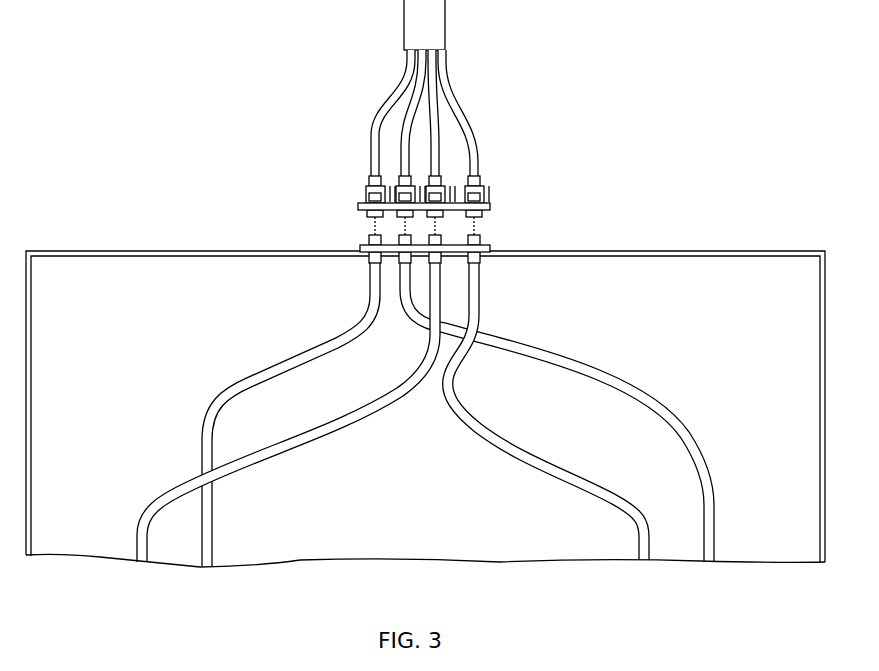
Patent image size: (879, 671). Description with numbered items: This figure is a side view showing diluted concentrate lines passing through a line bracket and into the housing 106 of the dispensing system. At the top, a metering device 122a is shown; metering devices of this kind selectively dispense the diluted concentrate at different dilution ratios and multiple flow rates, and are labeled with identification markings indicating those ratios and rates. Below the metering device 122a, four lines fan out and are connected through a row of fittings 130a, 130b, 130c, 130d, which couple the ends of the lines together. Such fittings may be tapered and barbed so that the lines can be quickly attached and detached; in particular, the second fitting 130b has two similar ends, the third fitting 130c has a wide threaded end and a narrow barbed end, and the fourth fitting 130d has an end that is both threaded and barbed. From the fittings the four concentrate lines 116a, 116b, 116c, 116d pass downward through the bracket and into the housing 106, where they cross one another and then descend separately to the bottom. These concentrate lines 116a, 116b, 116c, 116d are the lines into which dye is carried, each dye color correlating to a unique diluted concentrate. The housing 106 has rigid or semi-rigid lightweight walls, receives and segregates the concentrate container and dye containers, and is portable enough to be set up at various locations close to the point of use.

The housing 106 is at (210, 251).
The metering device 122a is at (376, 0).
The fitting 130a is at (401, 177).
The second fitting 130b is at (376, 177).
The third fitting 130c is at (440, 174).
The fourth fitting 130d is at (471, 175).
The concentrate line 116a is at (133, 535).
The concentrate line 116b is at (213, 522).
The concentrate line 116c is at (638, 538).
The concentrate line 116d is at (715, 528).